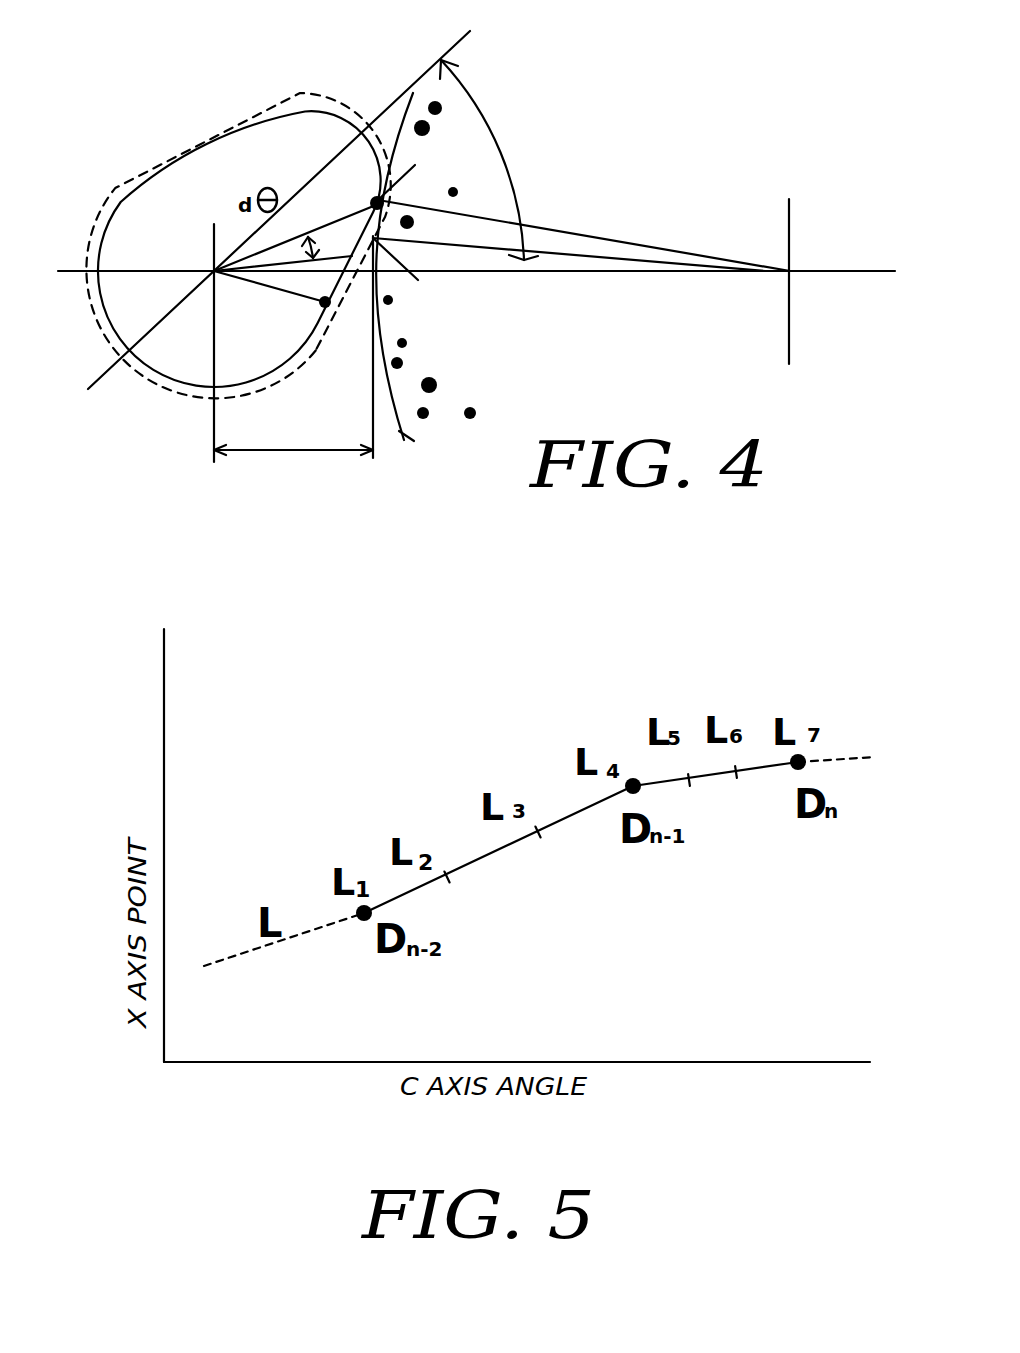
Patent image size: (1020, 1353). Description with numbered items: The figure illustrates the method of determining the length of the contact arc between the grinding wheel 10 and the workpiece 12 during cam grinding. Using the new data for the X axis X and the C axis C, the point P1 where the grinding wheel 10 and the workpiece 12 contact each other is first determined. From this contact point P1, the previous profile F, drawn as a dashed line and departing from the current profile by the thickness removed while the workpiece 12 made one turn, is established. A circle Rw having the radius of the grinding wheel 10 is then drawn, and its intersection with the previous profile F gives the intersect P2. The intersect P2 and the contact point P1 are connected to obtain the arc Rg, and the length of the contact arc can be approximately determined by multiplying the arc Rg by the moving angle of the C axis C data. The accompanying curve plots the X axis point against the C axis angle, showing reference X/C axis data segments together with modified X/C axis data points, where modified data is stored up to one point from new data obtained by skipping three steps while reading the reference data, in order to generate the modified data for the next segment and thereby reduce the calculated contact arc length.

The grinding wheel 10 is at (252, 358).
The workpiece 12 is at (404, 440).
The previous profile F is at (360, 100).
The C axis C is at (489, 160).
The X axis X is at (293, 431).
The arc Rg is at (376, 204).
The circle Rw is at (581, 223).
The contact point P1 is at (437, 165).
The intersect P2 is at (429, 353).